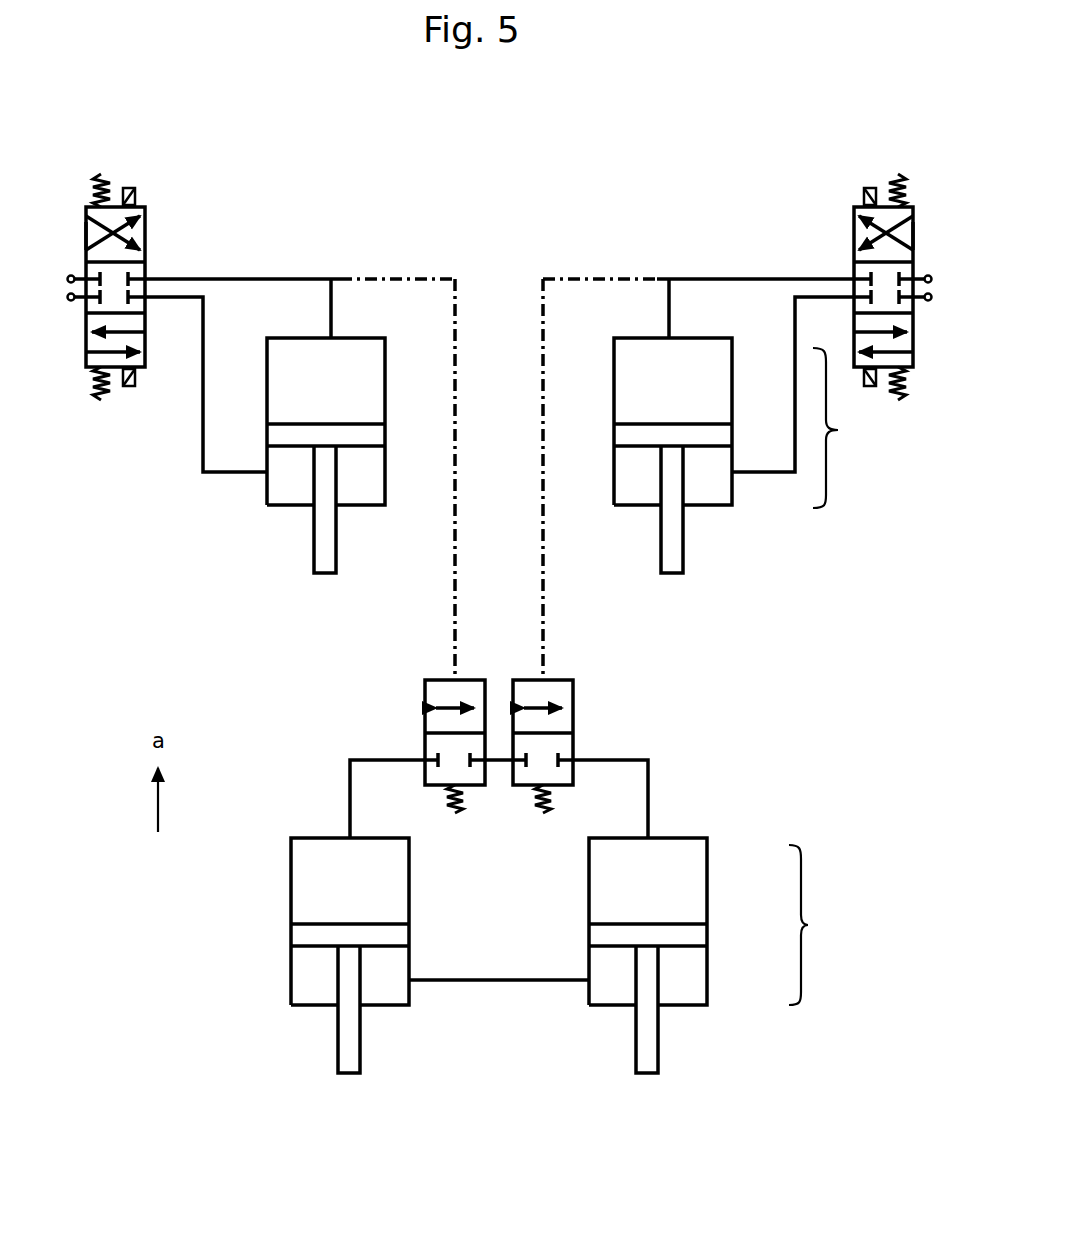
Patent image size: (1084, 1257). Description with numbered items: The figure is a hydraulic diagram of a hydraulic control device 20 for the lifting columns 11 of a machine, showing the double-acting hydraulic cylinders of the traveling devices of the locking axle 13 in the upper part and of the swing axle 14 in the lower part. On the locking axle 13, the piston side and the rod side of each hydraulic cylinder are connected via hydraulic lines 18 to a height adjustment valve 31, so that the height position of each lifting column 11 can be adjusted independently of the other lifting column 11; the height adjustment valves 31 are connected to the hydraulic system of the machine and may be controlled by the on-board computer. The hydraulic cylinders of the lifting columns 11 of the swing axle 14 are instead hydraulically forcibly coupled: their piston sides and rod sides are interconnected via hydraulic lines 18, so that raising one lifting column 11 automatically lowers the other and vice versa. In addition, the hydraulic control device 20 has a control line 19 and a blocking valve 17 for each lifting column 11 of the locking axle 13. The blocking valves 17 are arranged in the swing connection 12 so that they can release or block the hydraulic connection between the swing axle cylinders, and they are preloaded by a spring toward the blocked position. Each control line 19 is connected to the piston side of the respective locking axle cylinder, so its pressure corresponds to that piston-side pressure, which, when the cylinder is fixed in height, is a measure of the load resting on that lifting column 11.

The lifting column 11 is at (295, 483).
The swing connection 12 is at (320, 740).
The locking axle 13 is at (842, 428).
The swing axle 14 is at (819, 925).
The blocking valve 17 is at (425, 720).
The hydraulic line 18 is at (203, 355).
The control line 19 is at (455, 333).
The hydraulic control device 20 is at (628, 185).
The height adjustment valve 31 is at (148, 237).